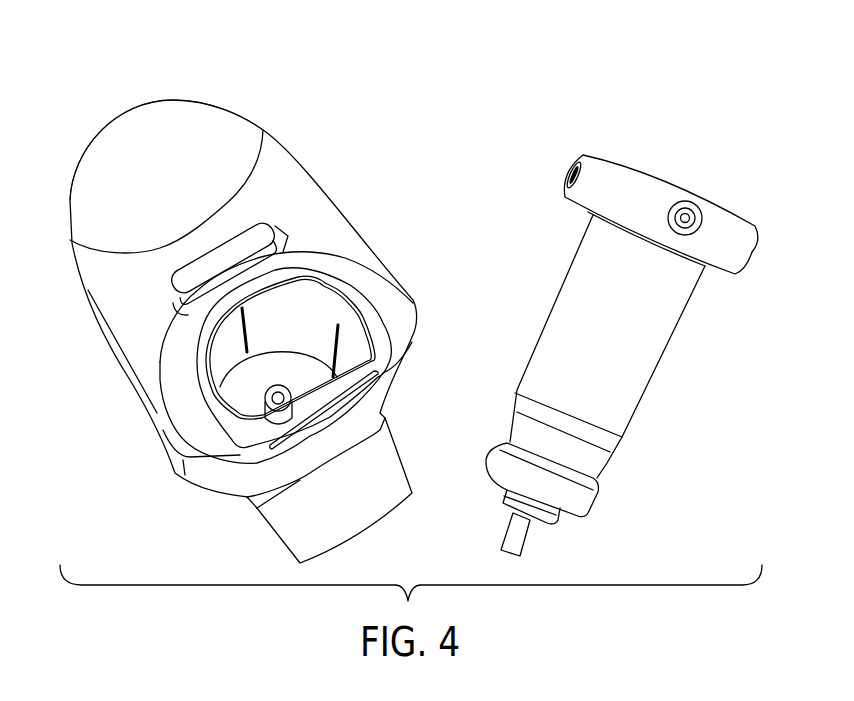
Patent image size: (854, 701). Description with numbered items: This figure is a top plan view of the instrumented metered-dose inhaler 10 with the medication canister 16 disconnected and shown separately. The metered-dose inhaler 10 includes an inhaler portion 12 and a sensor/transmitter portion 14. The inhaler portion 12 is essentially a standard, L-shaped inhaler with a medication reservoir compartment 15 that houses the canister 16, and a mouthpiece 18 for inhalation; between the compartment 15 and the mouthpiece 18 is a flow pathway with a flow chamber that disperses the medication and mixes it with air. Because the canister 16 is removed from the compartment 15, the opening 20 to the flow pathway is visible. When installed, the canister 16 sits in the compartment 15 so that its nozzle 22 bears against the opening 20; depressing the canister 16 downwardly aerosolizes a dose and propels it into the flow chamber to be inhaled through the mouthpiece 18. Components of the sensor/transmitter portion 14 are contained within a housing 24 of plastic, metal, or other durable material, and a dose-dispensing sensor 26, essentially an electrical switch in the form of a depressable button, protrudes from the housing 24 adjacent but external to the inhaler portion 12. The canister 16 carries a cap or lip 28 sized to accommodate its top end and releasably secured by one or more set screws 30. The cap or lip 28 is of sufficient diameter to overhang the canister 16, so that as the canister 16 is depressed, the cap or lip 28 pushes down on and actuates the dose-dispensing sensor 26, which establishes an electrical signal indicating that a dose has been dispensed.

The metered-dose inhaler 10 is at (535, 101).
The inhaler portion 12 is at (345, 298).
The sensor/transmitter portion 14 is at (247, 116).
The medication reservoir compartment 15 is at (307, 310).
The medication canister 16 is at (563, 320).
The mouthpiece 18 is at (387, 470).
The opening 20 is at (277, 386).
The nozzle 22 is at (516, 528).
The housing 24 is at (123, 130).
The dose-dispensing sensor 26 is at (257, 232).
The cap or lip 28 is at (643, 188).
The set screws 30 is at (570, 173).